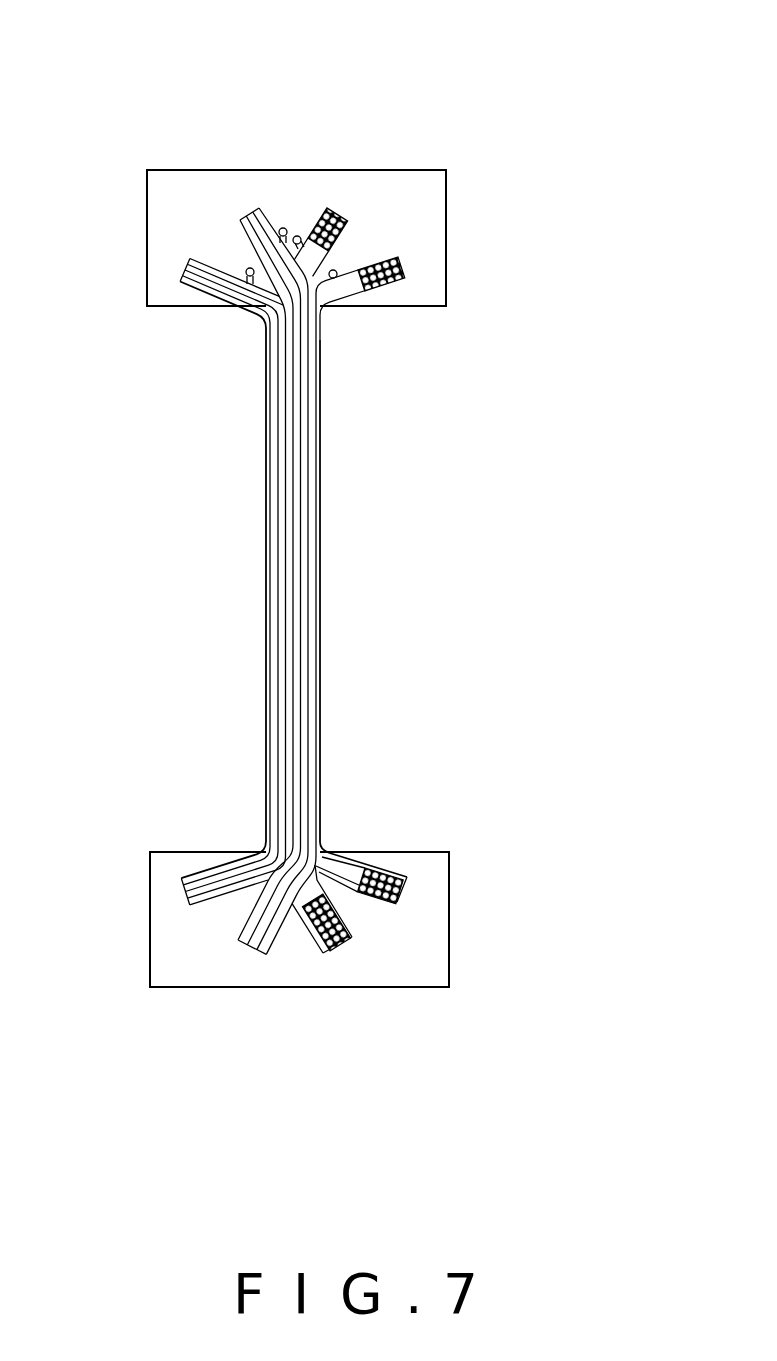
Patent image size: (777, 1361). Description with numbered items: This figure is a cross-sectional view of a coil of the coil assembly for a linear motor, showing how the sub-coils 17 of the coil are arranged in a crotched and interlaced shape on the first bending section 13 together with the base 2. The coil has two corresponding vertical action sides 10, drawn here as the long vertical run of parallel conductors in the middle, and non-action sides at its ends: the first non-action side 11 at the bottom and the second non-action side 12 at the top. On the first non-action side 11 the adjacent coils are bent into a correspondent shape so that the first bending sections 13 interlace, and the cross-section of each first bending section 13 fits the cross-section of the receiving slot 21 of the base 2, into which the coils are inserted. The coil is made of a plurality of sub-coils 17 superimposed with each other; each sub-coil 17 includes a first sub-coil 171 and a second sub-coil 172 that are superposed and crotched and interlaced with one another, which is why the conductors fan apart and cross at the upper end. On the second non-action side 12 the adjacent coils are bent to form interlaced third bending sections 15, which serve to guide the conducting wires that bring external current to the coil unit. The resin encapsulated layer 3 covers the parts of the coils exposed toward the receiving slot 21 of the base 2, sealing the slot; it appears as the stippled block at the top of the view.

The base 2 is at (435, 905).
The resin encapsulated layer 3 is at (432, 228).
The vertical action side 10 is at (298, 650).
The first non-action side 11 is at (295, 907).
The second non-action side 12 is at (300, 243).
The first bending section 13 is at (300, 922).
The third bending section 15 is at (285, 220).
The sub-coil 17 is at (130, 103).
The receiving slot 21 is at (337, 943).
The first sub-coil 171 is at (265, 240).
The second sub-coil 172 is at (185, 270).